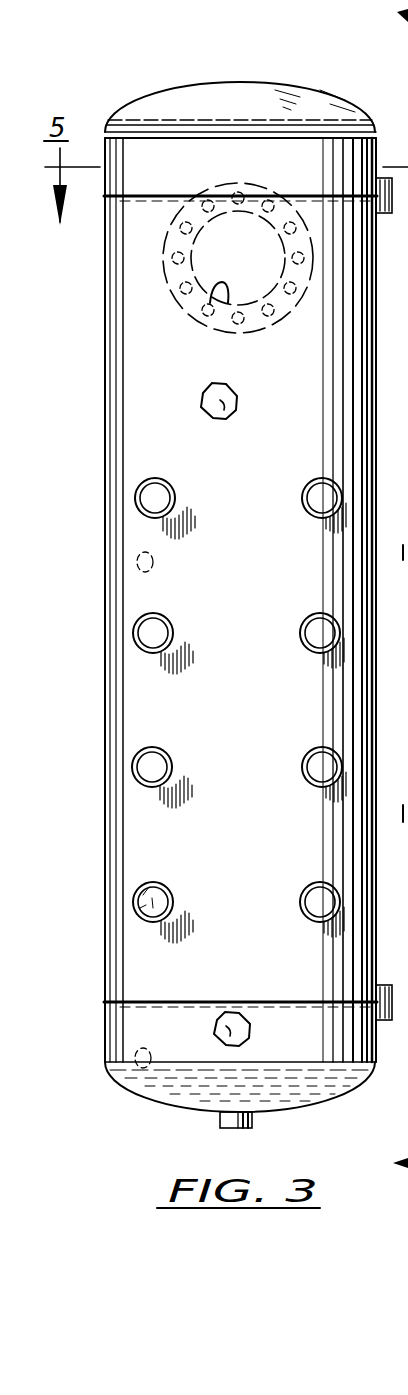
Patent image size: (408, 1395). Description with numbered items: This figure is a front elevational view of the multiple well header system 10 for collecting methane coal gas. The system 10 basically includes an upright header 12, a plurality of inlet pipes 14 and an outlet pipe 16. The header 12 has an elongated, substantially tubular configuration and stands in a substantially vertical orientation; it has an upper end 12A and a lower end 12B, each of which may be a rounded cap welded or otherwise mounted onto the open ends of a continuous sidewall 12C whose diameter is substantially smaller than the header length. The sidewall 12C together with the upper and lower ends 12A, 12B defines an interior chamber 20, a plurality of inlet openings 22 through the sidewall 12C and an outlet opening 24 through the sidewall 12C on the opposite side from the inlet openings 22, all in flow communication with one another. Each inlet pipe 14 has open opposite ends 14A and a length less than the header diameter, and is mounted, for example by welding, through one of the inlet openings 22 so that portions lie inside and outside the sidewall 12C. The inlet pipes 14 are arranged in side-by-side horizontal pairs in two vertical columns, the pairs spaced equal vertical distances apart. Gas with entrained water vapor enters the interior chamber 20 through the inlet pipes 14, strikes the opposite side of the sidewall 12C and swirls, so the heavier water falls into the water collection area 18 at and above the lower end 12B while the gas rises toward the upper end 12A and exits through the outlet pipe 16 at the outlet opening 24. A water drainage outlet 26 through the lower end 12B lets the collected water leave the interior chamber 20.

The multiple well header system 10 is at (186, 70).
The upright header 12 is at (98, 468).
The upper end 12A is at (270, 85).
The lower end 12B is at (174, 1103).
The continuous sidewall 12C is at (105, 580).
The inlet pipes 14 is at (308, 500).
The open opposite ends 14A is at (310, 781).
The outlet pipe 16 is at (248, 332).
The water collection area 18 is at (223, 1028).
The interior chamber 20 is at (228, 403).
The inlet openings 22 is at (305, 487).
The outlet opening 24 is at (208, 327).
The water drainage outlet 26 is at (252, 1118).